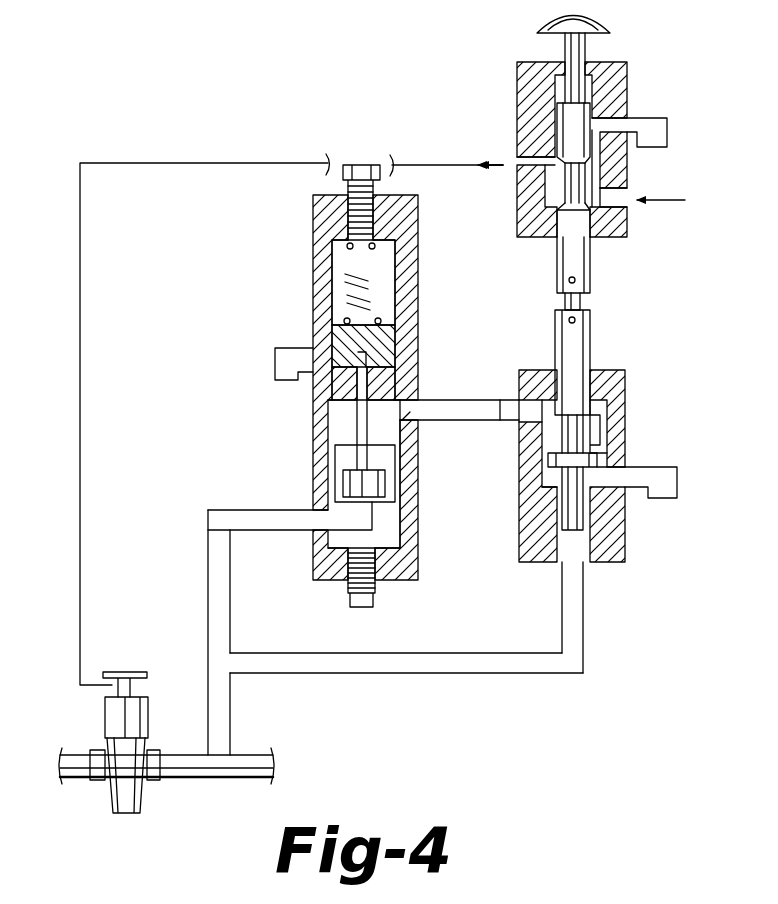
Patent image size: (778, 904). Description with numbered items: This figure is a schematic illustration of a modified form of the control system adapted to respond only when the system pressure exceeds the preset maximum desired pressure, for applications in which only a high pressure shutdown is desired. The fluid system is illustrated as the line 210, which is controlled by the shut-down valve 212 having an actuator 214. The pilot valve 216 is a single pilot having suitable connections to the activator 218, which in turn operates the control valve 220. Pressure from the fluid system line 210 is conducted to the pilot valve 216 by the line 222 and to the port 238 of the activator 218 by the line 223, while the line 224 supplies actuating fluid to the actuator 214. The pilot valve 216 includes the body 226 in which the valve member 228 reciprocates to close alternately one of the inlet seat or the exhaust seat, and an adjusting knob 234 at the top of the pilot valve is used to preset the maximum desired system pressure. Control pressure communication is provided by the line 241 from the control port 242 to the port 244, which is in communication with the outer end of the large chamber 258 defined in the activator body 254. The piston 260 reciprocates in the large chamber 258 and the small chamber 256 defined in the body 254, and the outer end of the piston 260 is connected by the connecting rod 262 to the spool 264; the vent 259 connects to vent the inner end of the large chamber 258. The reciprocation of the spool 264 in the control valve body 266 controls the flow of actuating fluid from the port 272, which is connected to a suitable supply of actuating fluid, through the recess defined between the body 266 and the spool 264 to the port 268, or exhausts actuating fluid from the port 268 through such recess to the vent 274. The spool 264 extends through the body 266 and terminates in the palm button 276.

The line 210 is at (70, 755).
The shut-down valve 212 is at (108, 817).
The actuator 214 is at (150, 699).
The pilot valve 216 is at (330, 360).
The activator 218 is at (624, 483).
The control valve 220 is at (590, 134).
The line 222 is at (234, 722).
The line 223 is at (416, 676).
The line 224 is at (150, 163).
The body 226 is at (320, 232).
The valve member 228 is at (352, 482).
The adjusting screw 234 is at (360, 165).
The port 238 is at (585, 567).
The line 241 is at (487, 374).
The control port 242 is at (420, 398).
The port 244 is at (519, 414).
The activator body 254 is at (622, 543).
The small chamber 256 is at (586, 508).
The large chamber 258 is at (604, 420).
The vent 259 is at (683, 473).
The piston 260 is at (592, 348).
The connecting rod 262 is at (582, 301).
The spool 264 is at (592, 278).
The control valve body 266 is at (622, 84).
The port 268 is at (512, 160).
The port 272 is at (628, 202).
The vent 274 is at (672, 128).
The palm button 276 is at (604, 20).